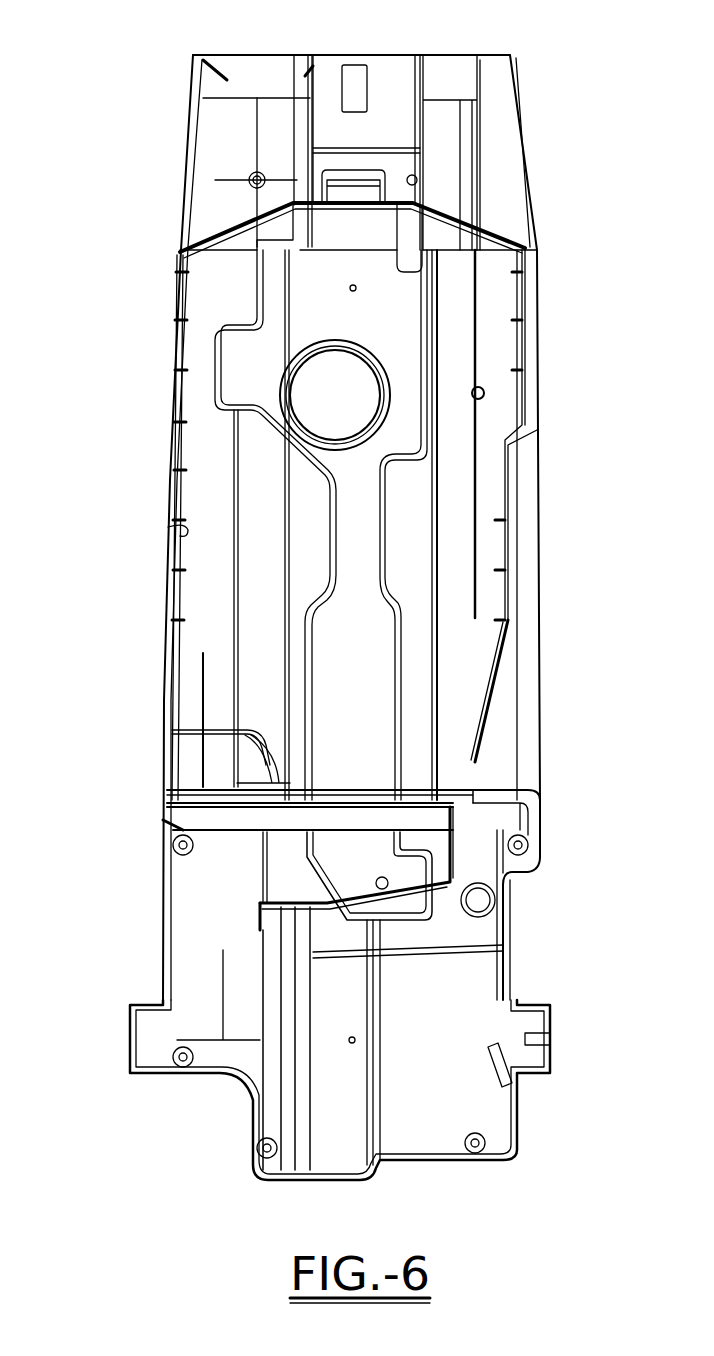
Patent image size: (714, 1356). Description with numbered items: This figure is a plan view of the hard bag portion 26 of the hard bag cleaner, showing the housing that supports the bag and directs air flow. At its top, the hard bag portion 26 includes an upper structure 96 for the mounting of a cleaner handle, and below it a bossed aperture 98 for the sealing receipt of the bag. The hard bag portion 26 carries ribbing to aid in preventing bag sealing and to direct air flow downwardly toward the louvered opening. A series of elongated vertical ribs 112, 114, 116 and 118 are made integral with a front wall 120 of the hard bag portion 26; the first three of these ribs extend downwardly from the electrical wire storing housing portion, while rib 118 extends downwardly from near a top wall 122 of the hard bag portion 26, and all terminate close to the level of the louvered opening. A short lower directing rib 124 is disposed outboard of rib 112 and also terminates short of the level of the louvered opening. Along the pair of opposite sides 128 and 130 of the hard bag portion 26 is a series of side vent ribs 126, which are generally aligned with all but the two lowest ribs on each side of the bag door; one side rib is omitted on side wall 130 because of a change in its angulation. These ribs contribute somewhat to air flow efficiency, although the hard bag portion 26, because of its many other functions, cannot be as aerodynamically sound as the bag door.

The hard bag portion 26 is at (158, 756).
The upper structure 96 is at (317, 77).
The bossed aperture 98 is at (363, 345).
The elongated vertical rib 112 is at (237, 597).
The elongated vertical rib 114 is at (288, 673).
The elongated vertical rib 116 is at (430, 635).
The elongated vertical rib 118 is at (477, 353).
The front wall 120 is at (250, 503).
The top wall 122 is at (222, 230).
The short lower directing rib 124 is at (202, 680).
The side vent ribs 126 is at (170, 535).
The side 128 is at (167, 318).
The side wall 130 is at (490, 693).